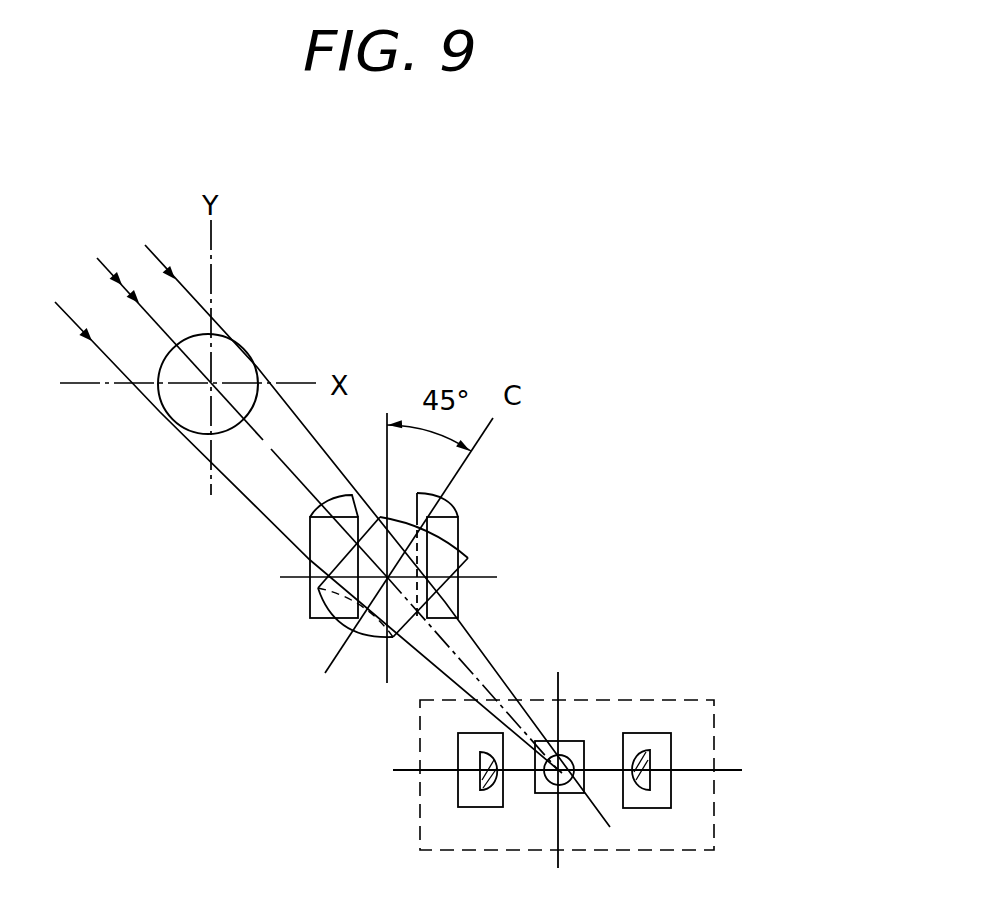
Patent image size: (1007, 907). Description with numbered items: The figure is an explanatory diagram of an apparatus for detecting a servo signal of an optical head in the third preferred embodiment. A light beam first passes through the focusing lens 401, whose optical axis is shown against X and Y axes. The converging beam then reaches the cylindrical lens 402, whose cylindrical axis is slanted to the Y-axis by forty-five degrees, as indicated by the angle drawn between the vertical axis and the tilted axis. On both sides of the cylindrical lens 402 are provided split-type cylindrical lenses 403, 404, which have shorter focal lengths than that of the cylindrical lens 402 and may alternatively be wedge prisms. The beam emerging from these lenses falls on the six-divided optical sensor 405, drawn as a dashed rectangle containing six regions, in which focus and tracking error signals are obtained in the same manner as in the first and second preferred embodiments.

The focusing lens 401 is at (232, 357).
The cylindrical lens 402 is at (368, 640).
The cylindrical lens or wedge prism 403 is at (307, 555).
The cylindrical lens or wedge prism 404 is at (448, 532).
The six-divided optical sensor 405 is at (588, 698).